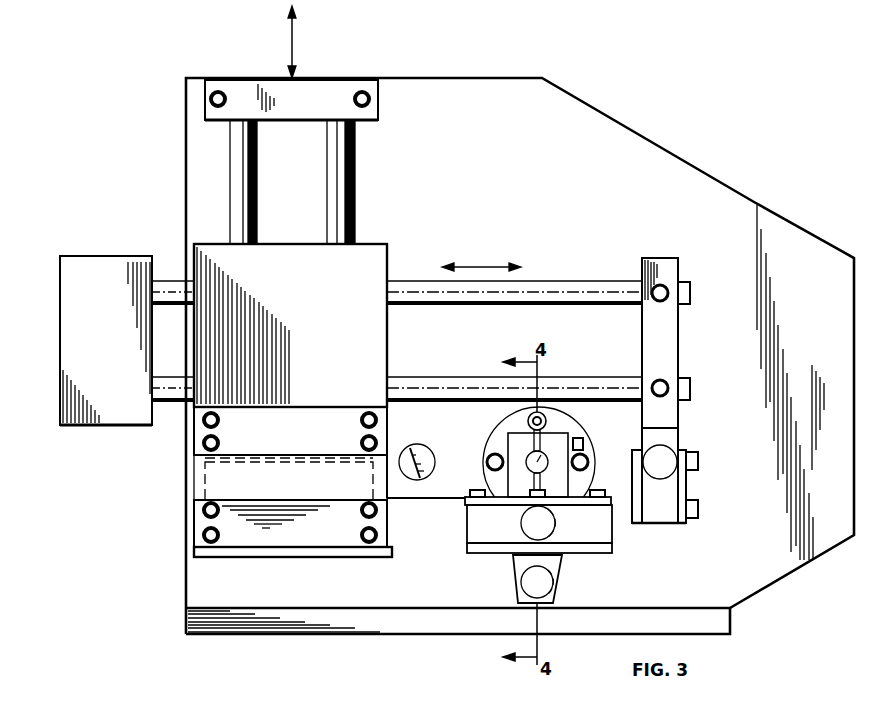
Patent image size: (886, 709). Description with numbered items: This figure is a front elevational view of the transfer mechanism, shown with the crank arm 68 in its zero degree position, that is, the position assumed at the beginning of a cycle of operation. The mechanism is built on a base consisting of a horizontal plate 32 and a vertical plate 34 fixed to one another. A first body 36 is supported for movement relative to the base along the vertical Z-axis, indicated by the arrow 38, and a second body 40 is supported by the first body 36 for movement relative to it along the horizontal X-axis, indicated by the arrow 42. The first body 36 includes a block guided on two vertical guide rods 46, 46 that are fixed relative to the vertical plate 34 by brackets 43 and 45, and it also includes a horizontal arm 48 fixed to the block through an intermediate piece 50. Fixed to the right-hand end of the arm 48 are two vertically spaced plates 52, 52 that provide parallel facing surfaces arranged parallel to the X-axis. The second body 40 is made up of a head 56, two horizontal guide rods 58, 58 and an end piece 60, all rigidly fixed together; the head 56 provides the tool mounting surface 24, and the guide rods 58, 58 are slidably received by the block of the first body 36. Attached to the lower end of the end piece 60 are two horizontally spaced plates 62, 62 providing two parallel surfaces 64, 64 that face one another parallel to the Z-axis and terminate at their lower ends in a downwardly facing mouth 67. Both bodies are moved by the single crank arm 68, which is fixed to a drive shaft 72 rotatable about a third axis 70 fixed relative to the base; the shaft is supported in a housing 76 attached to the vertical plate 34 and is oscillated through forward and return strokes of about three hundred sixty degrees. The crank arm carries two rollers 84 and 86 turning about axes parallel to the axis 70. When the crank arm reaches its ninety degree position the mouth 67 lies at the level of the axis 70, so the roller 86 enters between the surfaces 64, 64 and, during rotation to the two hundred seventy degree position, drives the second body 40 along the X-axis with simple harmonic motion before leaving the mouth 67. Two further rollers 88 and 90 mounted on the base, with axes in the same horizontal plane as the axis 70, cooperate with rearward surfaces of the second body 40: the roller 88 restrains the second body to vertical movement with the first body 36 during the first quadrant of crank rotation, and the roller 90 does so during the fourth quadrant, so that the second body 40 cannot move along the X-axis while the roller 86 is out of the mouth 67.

The tool mounting surface 24 is at (72, 355).
The horizontal plate 32 is at (728, 607).
The vertical plate 34 is at (670, 178).
The first body 36 is at (374, 258).
The arrow indicating Z-axis 38 is at (292, 60).
The second body 40 is at (104, 276).
The arrow indicating X-axis 42 is at (490, 267).
The bracket 43 is at (330, 106).
The bracket 45 is at (194, 478).
The vertical guide rods 46 is at (327, 217).
The horizontal arm 48 is at (338, 538).
The intermediate piece 50 is at (200, 460).
The vertically spaced plates 52 is at (478, 505).
The head 56 is at (70, 320).
The horizontal guide rods 58 is at (578, 289).
The end piece 60 is at (665, 320).
The horizontally spaced plates 62 is at (637, 498).
The parallel surfaces 64 is at (640, 515).
The downwardly facing mouth 67 is at (658, 524).
The crank arm 68 is at (556, 561).
The third axis 70 is at (528, 448).
The drive shaft 72 is at (560, 442).
The housing 76 is at (522, 431).
The roller 84 is at (556, 512).
The roller 86 is at (551, 575).
The roller 88 is at (668, 444).
The roller 90 is at (428, 455).